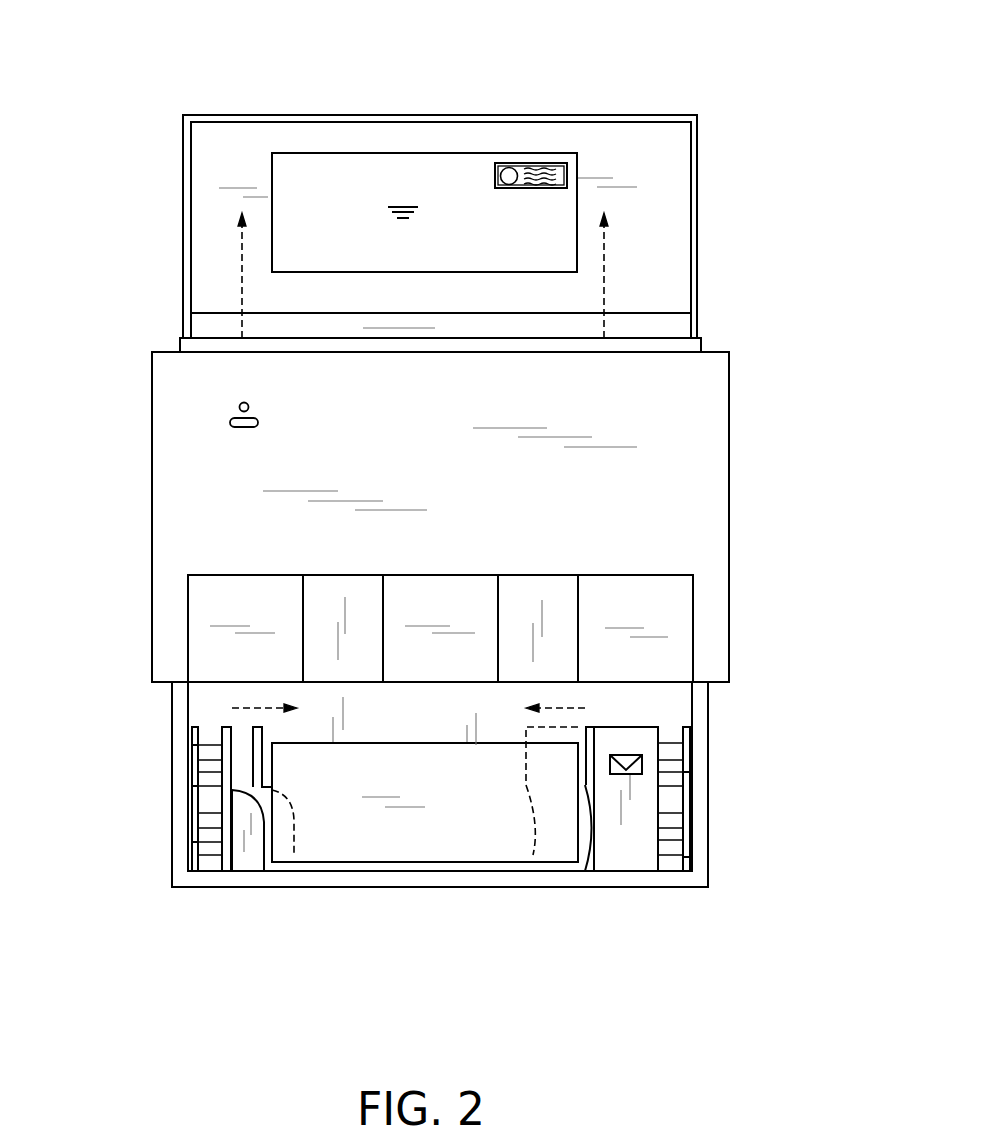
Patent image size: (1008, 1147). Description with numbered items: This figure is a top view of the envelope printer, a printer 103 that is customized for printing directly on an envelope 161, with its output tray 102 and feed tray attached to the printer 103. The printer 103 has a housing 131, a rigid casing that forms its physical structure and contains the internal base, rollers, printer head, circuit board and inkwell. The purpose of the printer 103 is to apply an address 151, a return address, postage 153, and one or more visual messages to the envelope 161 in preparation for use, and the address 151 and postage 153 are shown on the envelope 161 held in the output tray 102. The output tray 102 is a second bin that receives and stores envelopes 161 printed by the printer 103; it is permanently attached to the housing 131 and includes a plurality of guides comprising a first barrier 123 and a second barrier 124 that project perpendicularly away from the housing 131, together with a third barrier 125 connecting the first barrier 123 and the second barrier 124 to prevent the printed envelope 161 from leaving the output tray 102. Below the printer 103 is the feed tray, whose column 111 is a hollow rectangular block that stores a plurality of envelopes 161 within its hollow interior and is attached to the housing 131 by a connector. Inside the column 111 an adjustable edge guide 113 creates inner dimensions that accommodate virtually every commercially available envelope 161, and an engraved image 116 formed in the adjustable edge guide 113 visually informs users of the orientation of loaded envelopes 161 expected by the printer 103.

The output tray 102 is at (673, 212).
The printer 103 is at (697, 477).
The column 111 is at (687, 878).
The adjustable edge guide 113 is at (193, 858).
The engraved image 116 is at (640, 762).
The first barrier 123 is at (697, 302).
The second barrier 124 is at (185, 229).
The third barrier 125 is at (275, 115).
The housing 131 is at (729, 555).
The address 151 is at (402, 203).
The postage 153 is at (535, 167).
The envelope 161 is at (555, 215).